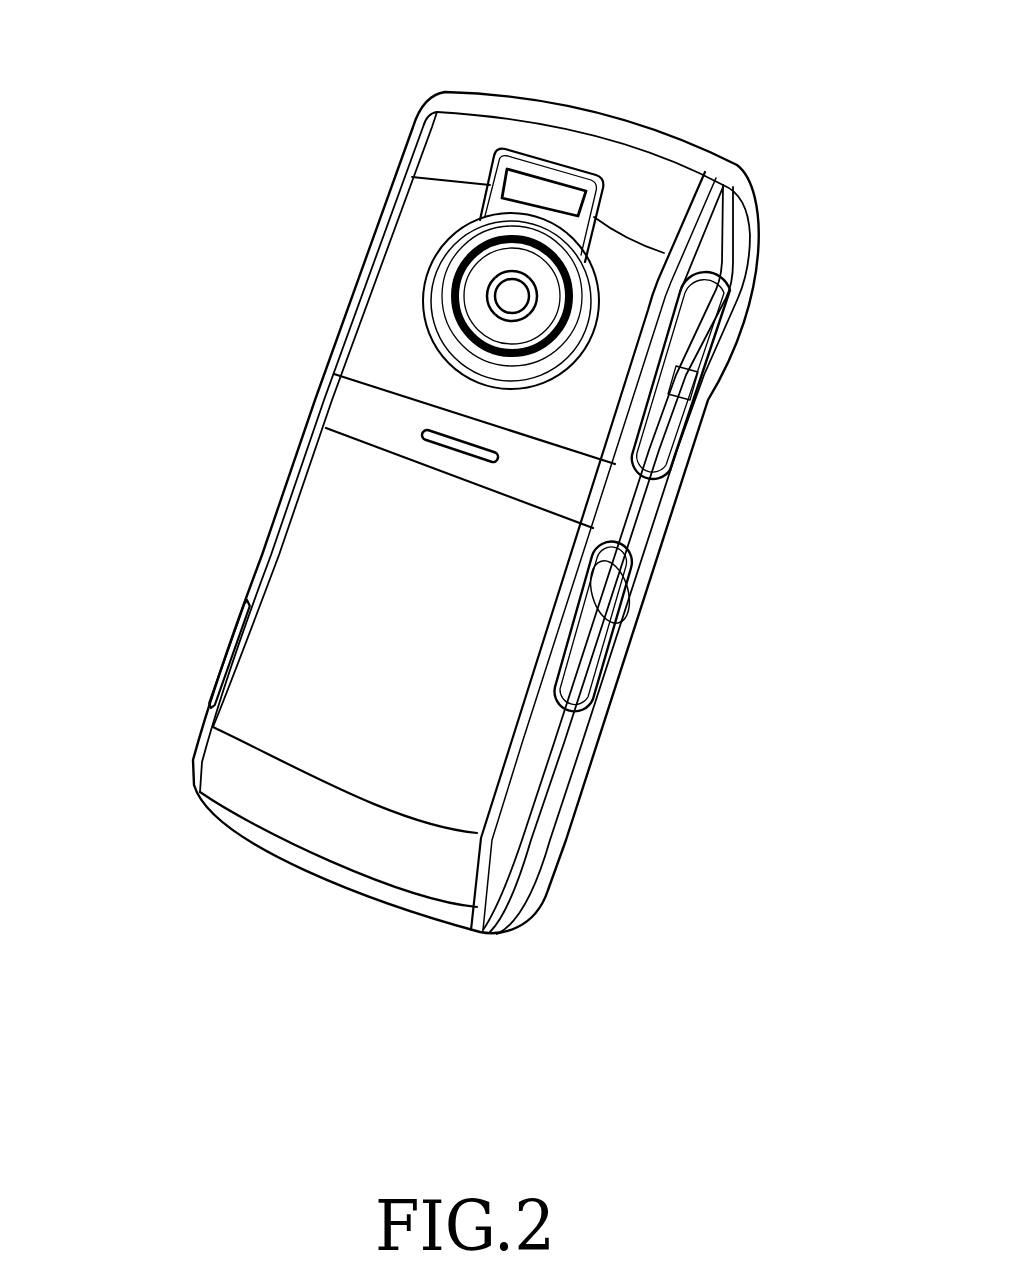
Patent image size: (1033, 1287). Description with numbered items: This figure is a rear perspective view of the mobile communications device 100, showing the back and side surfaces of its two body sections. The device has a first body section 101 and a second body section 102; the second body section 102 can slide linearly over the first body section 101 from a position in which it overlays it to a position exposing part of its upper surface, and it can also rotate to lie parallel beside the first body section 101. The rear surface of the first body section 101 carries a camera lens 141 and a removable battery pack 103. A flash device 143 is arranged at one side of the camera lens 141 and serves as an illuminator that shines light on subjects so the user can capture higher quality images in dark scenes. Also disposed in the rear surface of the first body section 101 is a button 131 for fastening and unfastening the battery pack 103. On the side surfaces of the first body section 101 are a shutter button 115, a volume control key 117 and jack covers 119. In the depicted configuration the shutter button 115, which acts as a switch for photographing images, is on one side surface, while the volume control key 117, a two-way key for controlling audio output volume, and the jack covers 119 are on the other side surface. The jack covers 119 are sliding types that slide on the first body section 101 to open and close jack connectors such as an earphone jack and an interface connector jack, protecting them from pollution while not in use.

The mobile communications device 100 is at (287, 118).
The first body section 101 is at (272, 431).
The second body section 102 is at (722, 485).
The battery pack 103 is at (295, 551).
The shutter button 115 is at (222, 648).
The volume control key 117 is at (710, 363).
The jack covers 119 is at (613, 588).
The button 131 is at (427, 433).
The camera lens 141 is at (515, 292).
The flash device 143 is at (543, 187).